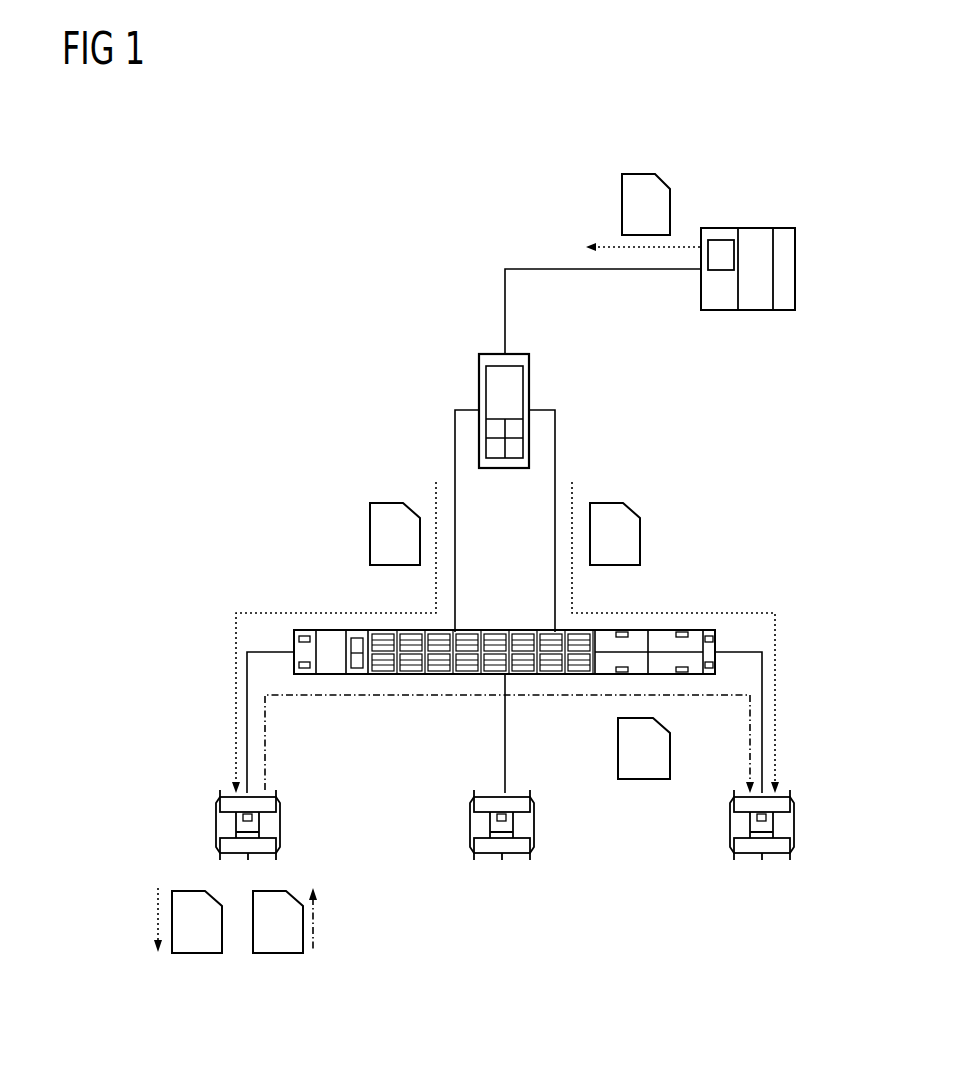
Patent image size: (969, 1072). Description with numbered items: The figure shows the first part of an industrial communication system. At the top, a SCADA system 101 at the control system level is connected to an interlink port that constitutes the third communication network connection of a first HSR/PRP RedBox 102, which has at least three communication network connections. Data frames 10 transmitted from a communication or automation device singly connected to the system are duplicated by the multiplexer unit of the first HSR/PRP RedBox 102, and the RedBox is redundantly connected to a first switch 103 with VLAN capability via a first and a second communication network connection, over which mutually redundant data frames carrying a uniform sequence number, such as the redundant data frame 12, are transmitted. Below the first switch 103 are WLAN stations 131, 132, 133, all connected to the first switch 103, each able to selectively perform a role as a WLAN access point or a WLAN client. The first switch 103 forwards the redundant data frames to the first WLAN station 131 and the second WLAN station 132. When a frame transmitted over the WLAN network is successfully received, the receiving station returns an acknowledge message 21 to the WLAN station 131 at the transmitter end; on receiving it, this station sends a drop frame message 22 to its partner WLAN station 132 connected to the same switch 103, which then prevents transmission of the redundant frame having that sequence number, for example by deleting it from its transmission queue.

The data frames 10 is at (640, 174).
The SCADA system 101 is at (762, 228).
The first HSR/PRP RedBox 102 is at (530, 360).
The first switch 103 is at (688, 630).
The redundant data frame 12 is at (608, 503).
The acknowledge message 21 is at (272, 954).
The drop frame message 22 is at (645, 780).
The first WLAN station 131 is at (282, 822).
The second WLAN station 132 is at (778, 858).
The WLAN station 133 is at (521, 858).